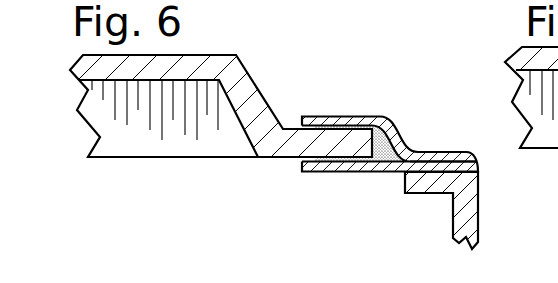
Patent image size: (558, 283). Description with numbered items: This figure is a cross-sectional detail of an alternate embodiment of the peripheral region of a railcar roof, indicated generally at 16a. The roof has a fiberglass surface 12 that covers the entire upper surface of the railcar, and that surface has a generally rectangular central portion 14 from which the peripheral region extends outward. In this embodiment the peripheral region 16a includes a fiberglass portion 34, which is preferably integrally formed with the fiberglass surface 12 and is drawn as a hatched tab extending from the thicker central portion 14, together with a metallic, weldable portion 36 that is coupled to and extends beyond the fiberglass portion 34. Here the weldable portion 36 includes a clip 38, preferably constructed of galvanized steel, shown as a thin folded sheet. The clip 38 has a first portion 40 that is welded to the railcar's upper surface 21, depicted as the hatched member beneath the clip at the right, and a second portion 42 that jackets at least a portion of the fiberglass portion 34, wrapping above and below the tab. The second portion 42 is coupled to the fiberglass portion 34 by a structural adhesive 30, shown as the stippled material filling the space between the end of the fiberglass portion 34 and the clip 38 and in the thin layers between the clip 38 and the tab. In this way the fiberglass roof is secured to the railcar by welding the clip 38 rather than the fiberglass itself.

The central portion 14 is at (208, 54).
The fiberglass surface 12 is at (287, 112).
The peripheral region 16a is at (371, 102).
The clip 38 is at (412, 147).
The first portion 40 is at (442, 152).
The fiberglass portion 34 is at (290, 152).
The weldable portion 36 is at (377, 180).
The second portion 42 is at (348, 173).
The structural adhesive 30 is at (386, 165).
The upper surface 21 is at (479, 215).